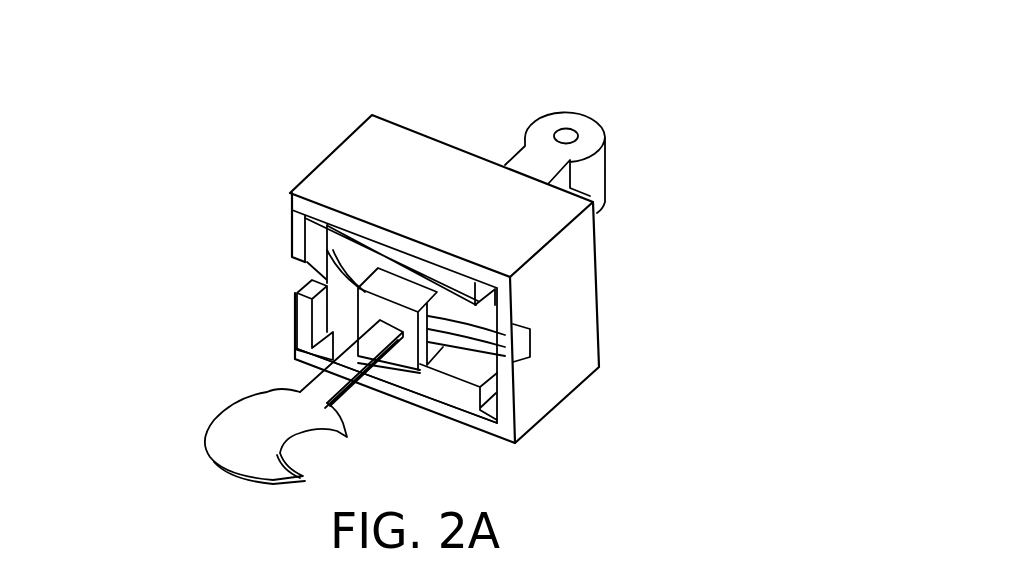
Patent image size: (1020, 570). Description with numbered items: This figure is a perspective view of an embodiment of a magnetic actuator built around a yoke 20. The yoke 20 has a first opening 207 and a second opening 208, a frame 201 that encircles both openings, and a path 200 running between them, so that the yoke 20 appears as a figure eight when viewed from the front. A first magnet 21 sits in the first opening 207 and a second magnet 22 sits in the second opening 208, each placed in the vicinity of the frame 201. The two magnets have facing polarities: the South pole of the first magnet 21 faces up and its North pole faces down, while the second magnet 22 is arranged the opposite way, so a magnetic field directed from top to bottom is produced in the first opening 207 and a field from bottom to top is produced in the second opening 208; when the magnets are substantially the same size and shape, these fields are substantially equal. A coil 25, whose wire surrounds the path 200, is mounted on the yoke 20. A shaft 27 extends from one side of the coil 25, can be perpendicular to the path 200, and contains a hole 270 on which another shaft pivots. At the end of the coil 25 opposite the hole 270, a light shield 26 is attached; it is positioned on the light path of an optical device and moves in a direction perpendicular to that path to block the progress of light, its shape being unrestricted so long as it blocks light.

The yoke 20 is at (347, 138).
The first magnet 21 is at (348, 240).
The second magnet 22 is at (430, 410).
The coil 25 is at (380, 313).
The light shield 26 is at (232, 428).
The shaft 27 is at (597, 175).
The path 200 is at (475, 365).
The frame 201 is at (580, 288).
The first opening 207 is at (487, 311).
The second opening 208 is at (450, 398).
The hole 270 is at (562, 137).